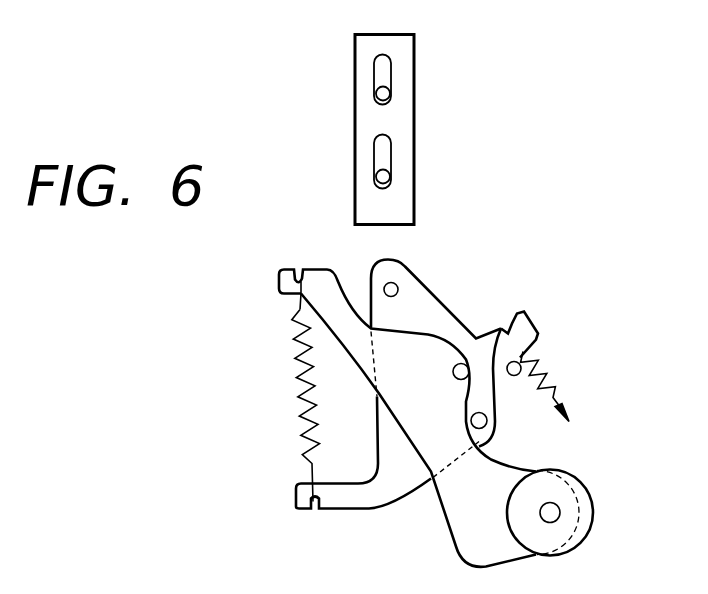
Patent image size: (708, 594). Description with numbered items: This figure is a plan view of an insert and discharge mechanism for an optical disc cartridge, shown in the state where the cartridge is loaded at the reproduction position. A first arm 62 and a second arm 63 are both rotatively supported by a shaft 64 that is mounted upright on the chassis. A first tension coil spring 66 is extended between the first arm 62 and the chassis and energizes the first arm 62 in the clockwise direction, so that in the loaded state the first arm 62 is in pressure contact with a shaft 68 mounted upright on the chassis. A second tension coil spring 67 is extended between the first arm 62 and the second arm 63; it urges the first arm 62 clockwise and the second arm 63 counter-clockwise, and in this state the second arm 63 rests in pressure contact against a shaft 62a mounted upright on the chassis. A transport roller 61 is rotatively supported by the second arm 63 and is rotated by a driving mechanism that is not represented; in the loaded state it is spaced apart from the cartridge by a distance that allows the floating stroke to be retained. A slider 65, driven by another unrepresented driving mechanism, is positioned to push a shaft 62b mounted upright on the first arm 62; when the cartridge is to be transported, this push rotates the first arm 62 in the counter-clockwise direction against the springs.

The transport roller 61 is at (593, 516).
The first arm 62 is at (365, 507).
The shaft 62a is at (485, 422).
The shaft 62b is at (397, 287).
The second arm 63 is at (432, 330).
The shaft 64 is at (478, 335).
The slider 65 is at (413, 113).
The first tension coil spring 66 is at (549, 371).
The second tension coil spring 67 is at (293, 387).
The shaft 68 is at (513, 375).